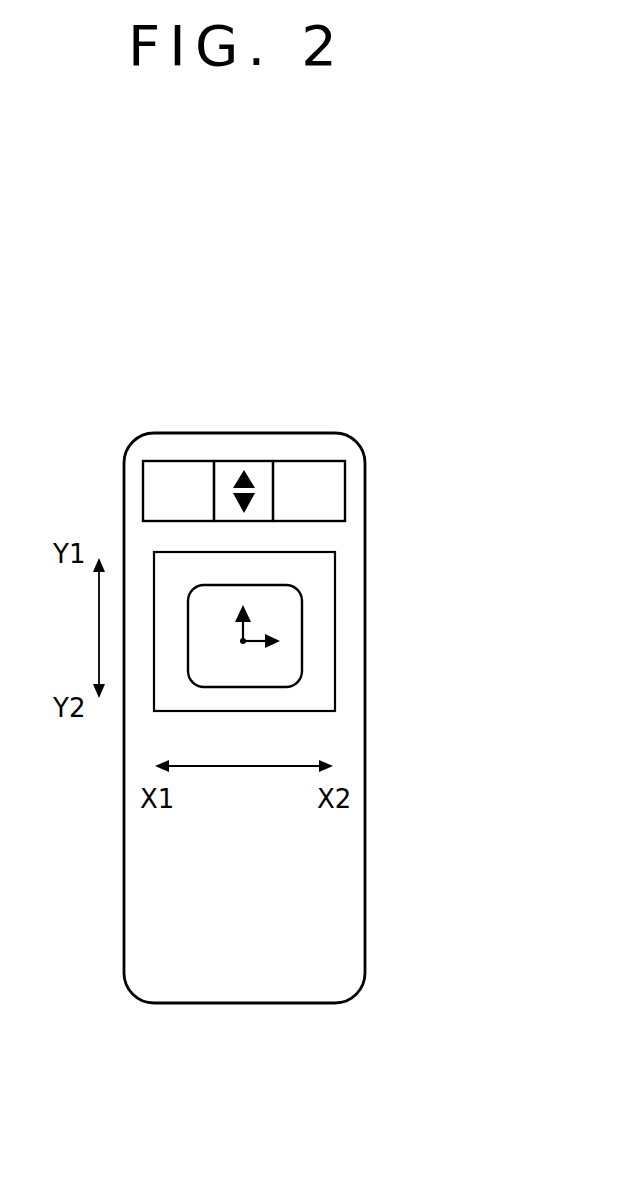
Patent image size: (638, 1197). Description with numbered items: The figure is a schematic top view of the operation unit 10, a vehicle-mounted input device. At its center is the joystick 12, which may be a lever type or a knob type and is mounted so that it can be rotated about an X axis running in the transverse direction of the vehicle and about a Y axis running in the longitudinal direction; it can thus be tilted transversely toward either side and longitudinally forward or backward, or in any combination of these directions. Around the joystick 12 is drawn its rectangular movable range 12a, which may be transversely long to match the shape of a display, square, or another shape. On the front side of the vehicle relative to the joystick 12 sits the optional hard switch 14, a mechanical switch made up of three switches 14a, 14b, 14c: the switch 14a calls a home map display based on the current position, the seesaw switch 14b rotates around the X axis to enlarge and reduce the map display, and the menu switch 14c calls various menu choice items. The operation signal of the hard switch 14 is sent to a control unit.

The operation unit 10 is at (105, 275).
The joystick 12 is at (290, 620).
The movable range 12a is at (334, 693).
The hard switch 14 is at (357, 340).
The switch 14a is at (170, 461).
The seesaw switch 14b is at (243, 461).
The menu switch 14c is at (322, 461).